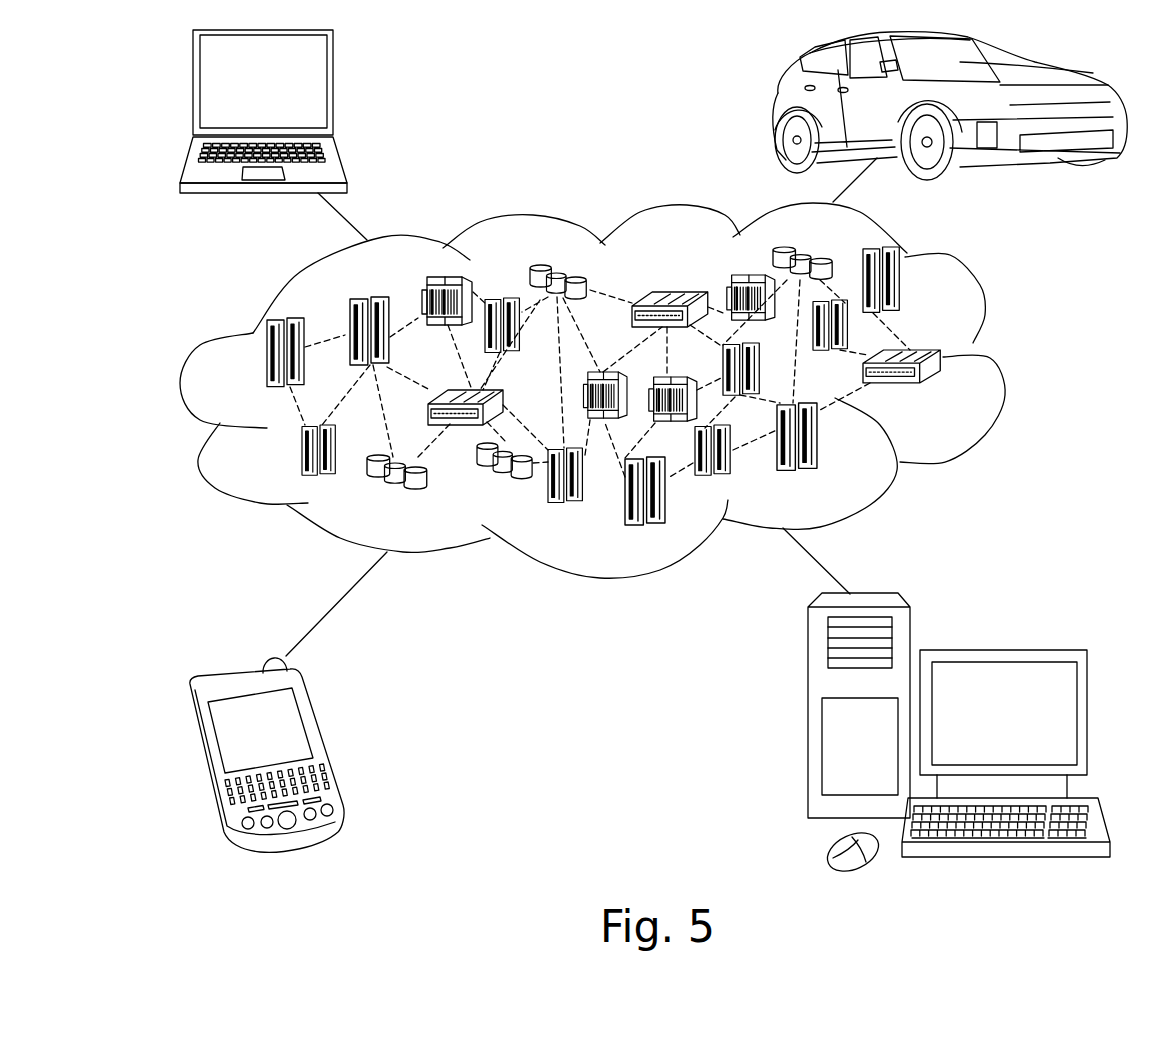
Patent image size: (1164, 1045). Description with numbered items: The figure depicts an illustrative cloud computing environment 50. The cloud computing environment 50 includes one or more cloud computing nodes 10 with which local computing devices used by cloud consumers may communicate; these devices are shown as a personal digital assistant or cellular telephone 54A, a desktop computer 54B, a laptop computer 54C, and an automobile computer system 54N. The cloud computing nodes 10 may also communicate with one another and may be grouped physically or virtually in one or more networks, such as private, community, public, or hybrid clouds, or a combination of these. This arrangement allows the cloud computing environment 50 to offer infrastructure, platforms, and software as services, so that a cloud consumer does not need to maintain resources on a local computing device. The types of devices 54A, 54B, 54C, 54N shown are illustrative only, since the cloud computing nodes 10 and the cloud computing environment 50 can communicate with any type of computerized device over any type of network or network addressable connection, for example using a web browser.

The cloud computing environment 50 is at (1002, 363).
The cloud computing node 10 is at (963, 400).
The personal digital assistant or cellular telephone 54A is at (326, 743).
The desktop computer 54B is at (1003, 650).
The laptop computer 54C is at (335, 93).
The automobile computer system 54N is at (781, 107).